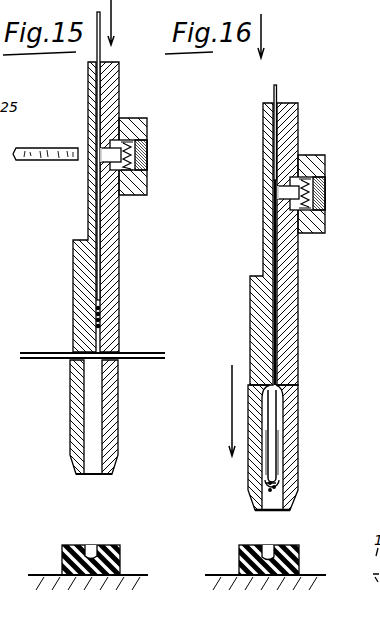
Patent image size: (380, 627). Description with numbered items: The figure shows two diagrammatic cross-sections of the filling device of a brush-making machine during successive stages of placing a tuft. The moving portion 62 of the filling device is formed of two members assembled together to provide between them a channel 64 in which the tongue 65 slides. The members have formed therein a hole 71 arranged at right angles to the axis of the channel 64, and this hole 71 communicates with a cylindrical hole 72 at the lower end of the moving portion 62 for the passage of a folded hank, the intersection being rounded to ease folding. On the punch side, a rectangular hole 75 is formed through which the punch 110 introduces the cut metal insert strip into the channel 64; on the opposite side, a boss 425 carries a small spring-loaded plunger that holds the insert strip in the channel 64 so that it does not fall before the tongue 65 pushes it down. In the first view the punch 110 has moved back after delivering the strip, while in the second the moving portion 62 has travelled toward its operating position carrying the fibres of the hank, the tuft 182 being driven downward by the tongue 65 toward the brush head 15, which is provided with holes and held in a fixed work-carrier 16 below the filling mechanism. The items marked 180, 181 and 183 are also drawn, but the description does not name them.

In FIG. 15, the brush head 15 is at (120, 560).
In FIG. 16, the brush head 15 is at (299, 560).
In FIG. 15, the work-carrier 16 is at (48, 585).
In FIG. 15, the moving portion 62 is at (119, 208).
In FIG. 16, the moving portion 62 is at (290, 236).
In FIG. 16, the channel 64 is at (266, 325).
In FIG. 15, the tongue 65 is at (98, 50).
In FIG. 16, the tongue 65 is at (273, 90).
In FIG. 15, the hole 71 is at (78, 348).
In FIG. 16, the hole 71 is at (252, 392).
In FIG. 15, the cylindrical hole 72 is at (96, 435).
In FIG. 16, the cylindrical hole 72 is at (258, 501).
In FIG. 15, the rectangular hole 75 is at (88, 160).
In FIG. 16, the rectangular hole 75 is at (263, 190).
In FIG. 15, the punch 110 is at (44, 149).
In FIG. 15, the thread knot 180 is at (101, 318).
In FIG. 16, the thread knot 180 is at (280, 488).
In FIG. 15, the plate 181 is at (125, 361).
In FIG. 16, the tuft 182 is at (279, 445).
In FIG. 15, the recess 183 is at (90, 545).
In FIG. 16, the recess 183 is at (268, 545).
In FIG. 15, the boss 425 is at (147, 130).
In FIG. 16, the boss 425 is at (316, 157).